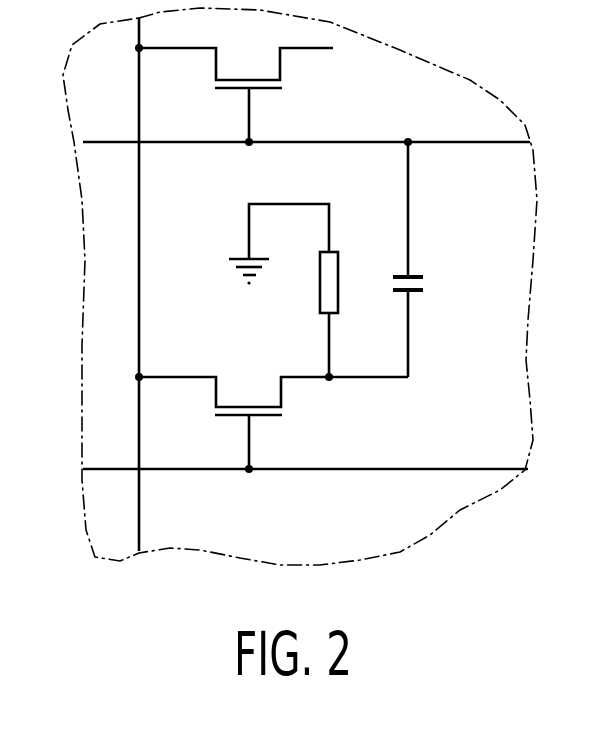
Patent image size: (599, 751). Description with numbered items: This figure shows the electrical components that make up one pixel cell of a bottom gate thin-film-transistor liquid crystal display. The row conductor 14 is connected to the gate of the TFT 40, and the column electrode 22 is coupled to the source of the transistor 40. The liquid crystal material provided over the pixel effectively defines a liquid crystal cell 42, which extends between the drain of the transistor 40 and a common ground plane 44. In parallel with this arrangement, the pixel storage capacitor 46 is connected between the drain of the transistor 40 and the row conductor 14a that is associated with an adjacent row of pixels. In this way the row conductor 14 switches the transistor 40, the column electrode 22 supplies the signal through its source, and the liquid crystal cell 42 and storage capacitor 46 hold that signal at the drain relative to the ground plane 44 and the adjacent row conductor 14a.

The row conductor 14 is at (472, 469).
The row conductor 14a is at (493, 142).
The column electrode 22 is at (138, 280).
The TFT 40 is at (294, 404).
The liquid crystal cell 42 is at (318, 294).
The common ground plane 44 is at (243, 258).
The pixel storage capacitor 46 is at (418, 283).